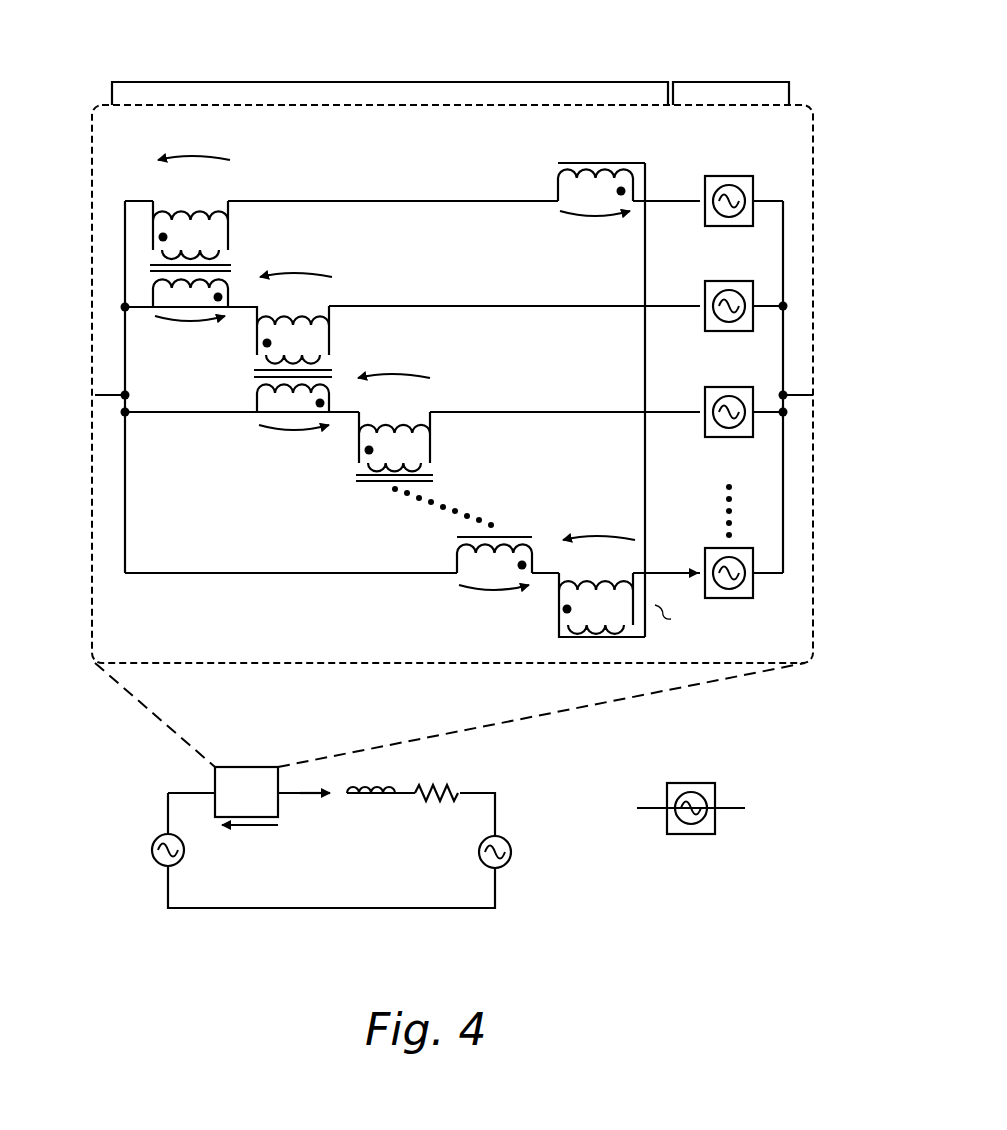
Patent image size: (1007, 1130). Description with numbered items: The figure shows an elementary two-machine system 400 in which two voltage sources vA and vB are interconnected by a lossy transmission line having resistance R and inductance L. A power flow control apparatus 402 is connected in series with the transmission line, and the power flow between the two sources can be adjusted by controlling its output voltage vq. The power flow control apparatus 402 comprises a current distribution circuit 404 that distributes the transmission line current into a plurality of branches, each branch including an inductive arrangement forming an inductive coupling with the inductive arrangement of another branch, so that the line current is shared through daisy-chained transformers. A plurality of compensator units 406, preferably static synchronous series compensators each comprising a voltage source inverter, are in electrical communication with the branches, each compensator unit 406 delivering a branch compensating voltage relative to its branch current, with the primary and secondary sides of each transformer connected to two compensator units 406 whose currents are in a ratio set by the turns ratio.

The elementary two-machine system 400 is at (148, 900).
The power flow control apparatus 402 is at (830, 258).
The current distribution circuit 404 is at (399, 82).
The compensator unit 406 is at (724, 82).